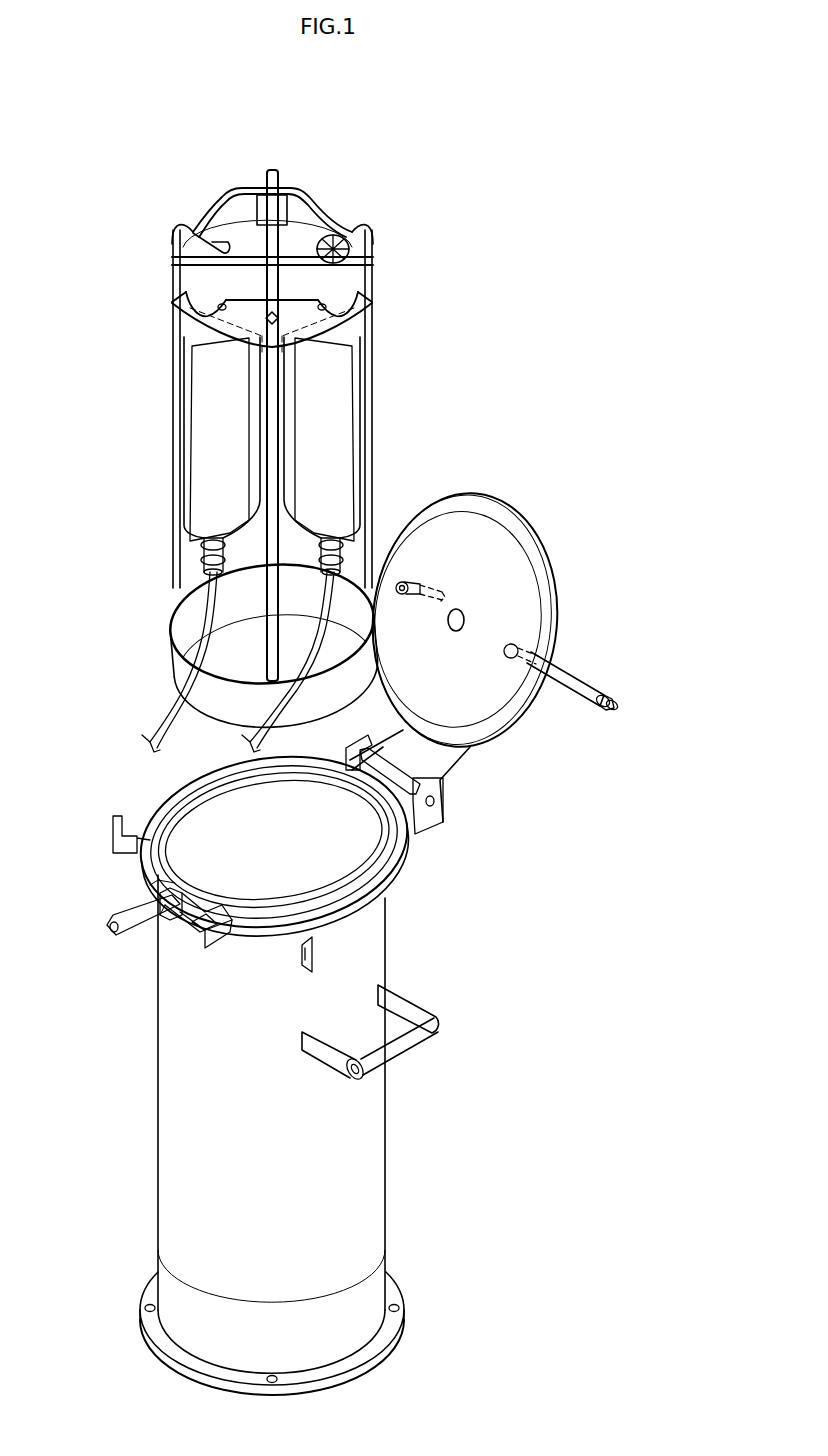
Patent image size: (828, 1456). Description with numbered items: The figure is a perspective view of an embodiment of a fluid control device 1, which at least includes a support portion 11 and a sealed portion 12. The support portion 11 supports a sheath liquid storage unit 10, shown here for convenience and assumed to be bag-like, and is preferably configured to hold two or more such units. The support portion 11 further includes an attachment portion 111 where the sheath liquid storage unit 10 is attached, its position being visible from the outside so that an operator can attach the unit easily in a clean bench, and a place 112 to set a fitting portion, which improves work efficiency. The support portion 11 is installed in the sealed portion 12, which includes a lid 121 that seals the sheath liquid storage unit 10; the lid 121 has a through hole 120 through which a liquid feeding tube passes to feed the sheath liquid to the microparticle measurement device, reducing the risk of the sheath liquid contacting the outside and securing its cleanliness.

The fluid control device 1 is at (555, 234).
The sheath liquid storage unit 10 is at (184, 445).
The support portion 11 is at (368, 291).
The attachment portion 111 is at (175, 244).
The place to set a fitting portion 112 is at (372, 243).
The sealed portion 12 is at (375, 945).
The through hole 120 is at (458, 607).
The lid 121 is at (540, 605).